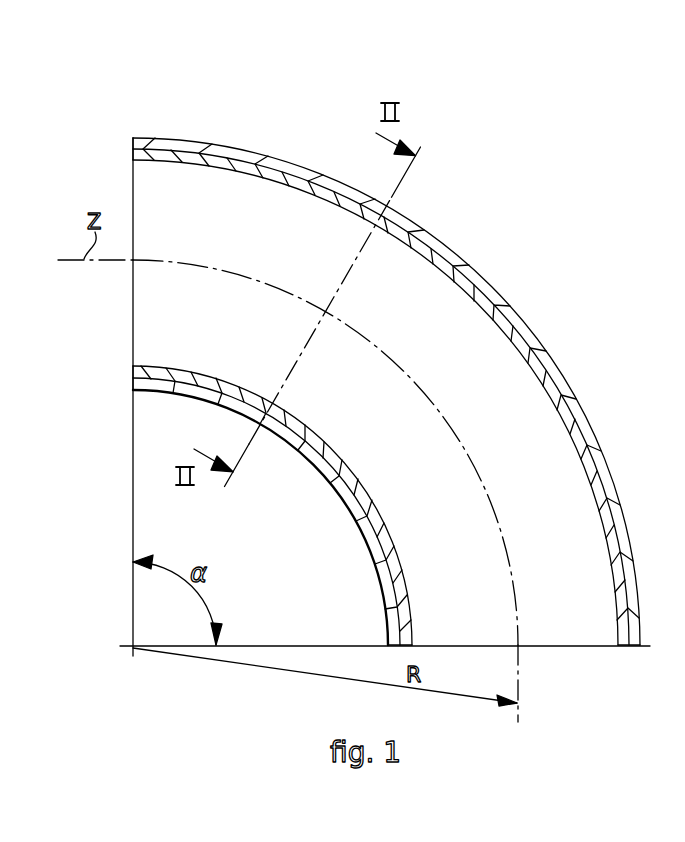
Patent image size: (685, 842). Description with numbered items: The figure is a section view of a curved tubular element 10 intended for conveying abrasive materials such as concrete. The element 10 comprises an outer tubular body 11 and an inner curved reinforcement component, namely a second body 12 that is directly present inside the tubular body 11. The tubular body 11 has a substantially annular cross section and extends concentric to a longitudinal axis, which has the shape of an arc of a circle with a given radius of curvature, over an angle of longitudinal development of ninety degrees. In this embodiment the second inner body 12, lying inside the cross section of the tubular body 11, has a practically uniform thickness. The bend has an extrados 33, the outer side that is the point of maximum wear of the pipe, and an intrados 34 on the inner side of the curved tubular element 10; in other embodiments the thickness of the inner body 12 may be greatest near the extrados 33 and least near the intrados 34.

The curved tubular element 10 is at (530, 193).
The tubular body 11 is at (212, 150).
The second body 12 is at (248, 168).
The extrados 33 is at (153, 139).
The intrados 34 is at (318, 475).